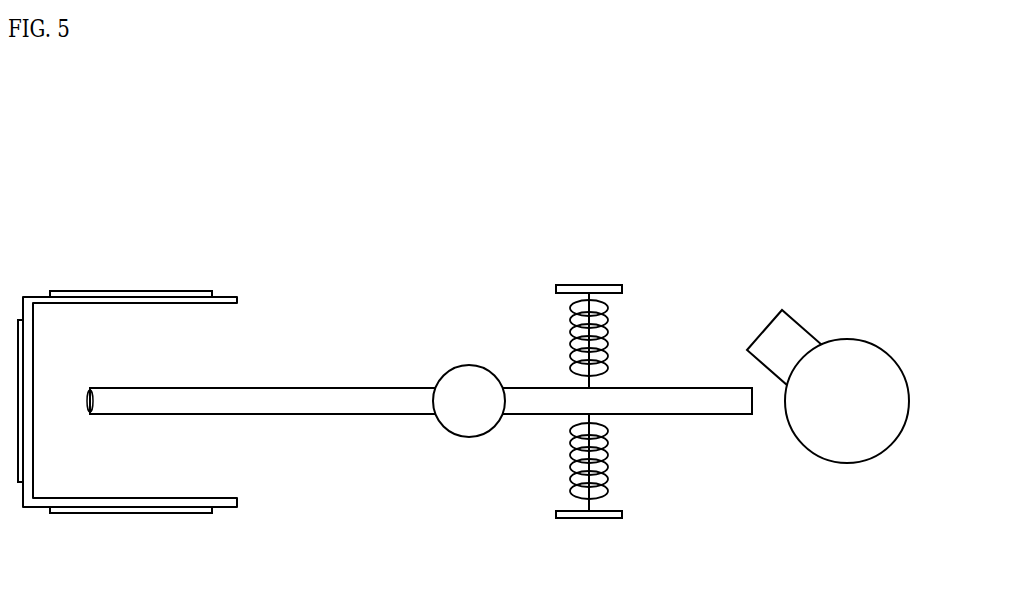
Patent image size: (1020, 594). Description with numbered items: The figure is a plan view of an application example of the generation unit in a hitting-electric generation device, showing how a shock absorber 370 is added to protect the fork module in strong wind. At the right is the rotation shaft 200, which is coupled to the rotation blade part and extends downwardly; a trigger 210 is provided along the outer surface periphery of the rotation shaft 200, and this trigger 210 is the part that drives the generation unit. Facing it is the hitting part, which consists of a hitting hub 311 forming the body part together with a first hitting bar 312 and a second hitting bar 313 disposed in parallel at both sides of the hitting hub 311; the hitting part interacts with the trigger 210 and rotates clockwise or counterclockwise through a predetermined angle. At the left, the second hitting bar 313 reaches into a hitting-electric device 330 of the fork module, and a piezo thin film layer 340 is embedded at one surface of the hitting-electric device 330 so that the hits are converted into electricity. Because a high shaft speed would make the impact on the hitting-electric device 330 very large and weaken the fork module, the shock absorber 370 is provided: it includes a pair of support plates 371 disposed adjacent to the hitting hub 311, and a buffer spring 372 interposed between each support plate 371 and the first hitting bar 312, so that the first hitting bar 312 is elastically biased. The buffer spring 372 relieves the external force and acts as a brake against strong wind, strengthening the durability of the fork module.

The rotation shaft 200 is at (863, 438).
The trigger 210 is at (788, 332).
The hitting hub 311 is at (457, 427).
The first hitting bar 312 is at (525, 415).
The second hitting bar 313 is at (318, 405).
The hitting-electric device 330 is at (228, 297).
The piezo thin film layer 340 is at (140, 290).
The shock absorber 370 is at (667, 324).
The support plate 371 is at (580, 282).
The buffer spring 372 is at (607, 337).